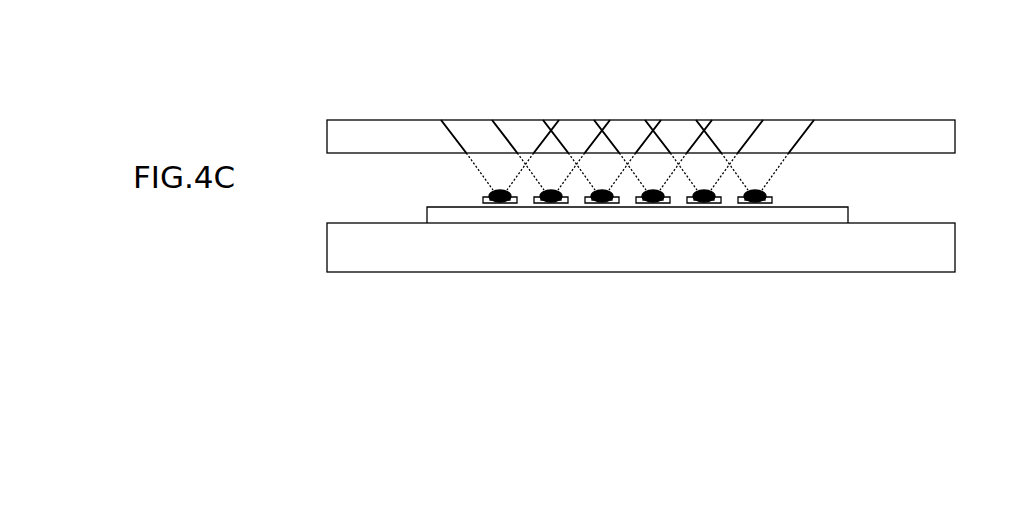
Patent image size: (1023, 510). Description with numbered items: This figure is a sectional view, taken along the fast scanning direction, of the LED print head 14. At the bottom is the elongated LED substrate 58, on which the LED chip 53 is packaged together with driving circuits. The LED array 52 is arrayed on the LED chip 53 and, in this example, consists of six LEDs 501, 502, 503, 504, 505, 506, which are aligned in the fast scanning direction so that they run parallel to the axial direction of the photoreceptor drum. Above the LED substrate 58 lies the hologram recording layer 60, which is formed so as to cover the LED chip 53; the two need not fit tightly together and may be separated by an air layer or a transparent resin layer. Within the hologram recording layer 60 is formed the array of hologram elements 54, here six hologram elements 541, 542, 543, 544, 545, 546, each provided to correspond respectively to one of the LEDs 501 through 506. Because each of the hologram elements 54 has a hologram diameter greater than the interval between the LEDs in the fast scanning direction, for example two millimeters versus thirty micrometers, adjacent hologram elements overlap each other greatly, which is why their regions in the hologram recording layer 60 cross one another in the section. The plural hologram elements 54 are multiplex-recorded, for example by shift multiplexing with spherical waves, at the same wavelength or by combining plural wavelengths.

The LED print head 14 is at (941, 92).
The hologram recording layer 60 is at (933, 153).
The LED substrate 58 is at (942, 232).
The LED chip 53 is at (843, 217).
The hologram elements 54 is at (803, 63).
The hologram element 546 is at (472, 128).
The hologram element 545 is at (528, 128).
The hologram element 544 is at (585, 128).
The hologram element 543 is at (687, 128).
The hologram element 542 is at (738, 128).
The hologram element 541 is at (790, 128).
The LED array 52 is at (795, 305).
The LED 506 is at (498, 203).
The LED 505 is at (549, 203).
The LED 504 is at (600, 203).
The LED 503 is at (651, 203).
The LED 502 is at (702, 203).
The LED 501 is at (753, 203).